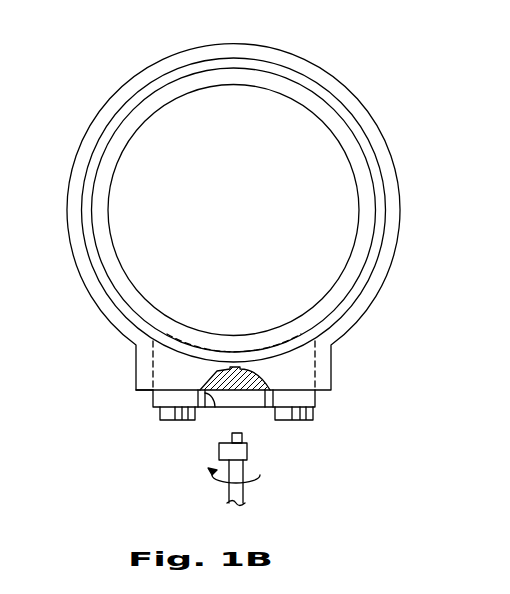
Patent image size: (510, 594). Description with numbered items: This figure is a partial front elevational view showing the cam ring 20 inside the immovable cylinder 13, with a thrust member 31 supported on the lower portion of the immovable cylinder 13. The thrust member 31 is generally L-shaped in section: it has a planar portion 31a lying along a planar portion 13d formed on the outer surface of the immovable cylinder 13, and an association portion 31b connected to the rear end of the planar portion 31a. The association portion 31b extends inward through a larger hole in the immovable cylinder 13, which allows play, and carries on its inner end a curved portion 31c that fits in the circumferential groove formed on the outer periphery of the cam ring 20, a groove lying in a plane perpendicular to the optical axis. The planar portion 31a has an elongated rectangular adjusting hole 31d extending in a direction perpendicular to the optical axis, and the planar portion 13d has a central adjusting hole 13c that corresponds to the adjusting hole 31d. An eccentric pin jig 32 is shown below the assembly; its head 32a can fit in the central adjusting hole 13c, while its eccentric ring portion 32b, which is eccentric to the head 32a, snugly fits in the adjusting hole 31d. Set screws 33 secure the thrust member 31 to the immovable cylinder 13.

The immovable cylinder 13 is at (219, 50).
The cam ring 20 is at (262, 78).
The curved portion 31c is at (206, 342).
The central adjusting hole 13c is at (208, 381).
The association portion 31b is at (316, 365).
The planar portion 13d is at (160, 395).
The thrust member 31 is at (290, 419).
The planar portion 31a is at (307, 397).
The adjusting hole 31d is at (205, 409).
The set screws 33 is at (157, 413).
The eccentric pin jig 32 is at (263, 468).
The head 32a is at (266, 441).
The eccentric ring portion 32b is at (240, 455).